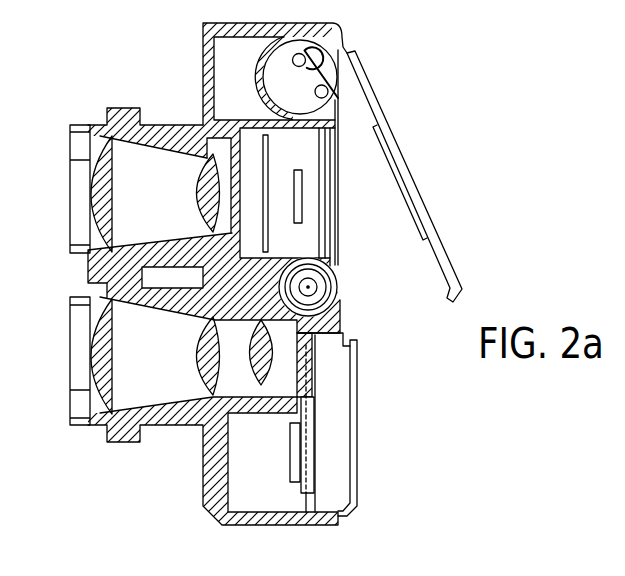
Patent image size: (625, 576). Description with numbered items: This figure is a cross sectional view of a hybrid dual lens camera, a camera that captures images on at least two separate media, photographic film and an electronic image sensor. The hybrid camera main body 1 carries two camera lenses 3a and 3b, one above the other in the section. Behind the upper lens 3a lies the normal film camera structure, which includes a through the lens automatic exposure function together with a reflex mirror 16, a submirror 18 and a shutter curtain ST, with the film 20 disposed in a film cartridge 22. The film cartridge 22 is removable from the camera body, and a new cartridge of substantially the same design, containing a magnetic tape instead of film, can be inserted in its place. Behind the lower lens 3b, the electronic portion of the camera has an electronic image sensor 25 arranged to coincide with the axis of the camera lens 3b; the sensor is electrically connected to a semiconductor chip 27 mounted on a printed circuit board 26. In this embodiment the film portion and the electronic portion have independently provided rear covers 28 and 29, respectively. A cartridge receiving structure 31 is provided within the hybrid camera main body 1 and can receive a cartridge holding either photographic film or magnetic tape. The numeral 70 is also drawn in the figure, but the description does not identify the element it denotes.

The hybrid camera main body 1 is at (253, 525).
The camera lens 3a is at (127, 198).
The camera lens 3b is at (127, 367).
The reflex mirror 16 is at (269, 170).
The submirror 18 is at (302, 194).
The film 20 is at (340, 122).
The film cartridge 22 is at (330, 302).
The electronic image sensor 25 is at (292, 400).
The printed circuit board 26 is at (302, 468).
The semiconductor chip 27 is at (290, 463).
The rear cover 28 is at (452, 263).
The rear cover 29 is at (358, 415).
The cartridge receiving structure 31 is at (207, 317).
The stop plate 70 is at (336, 163).
The shutter curtain ST is at (326, 233).